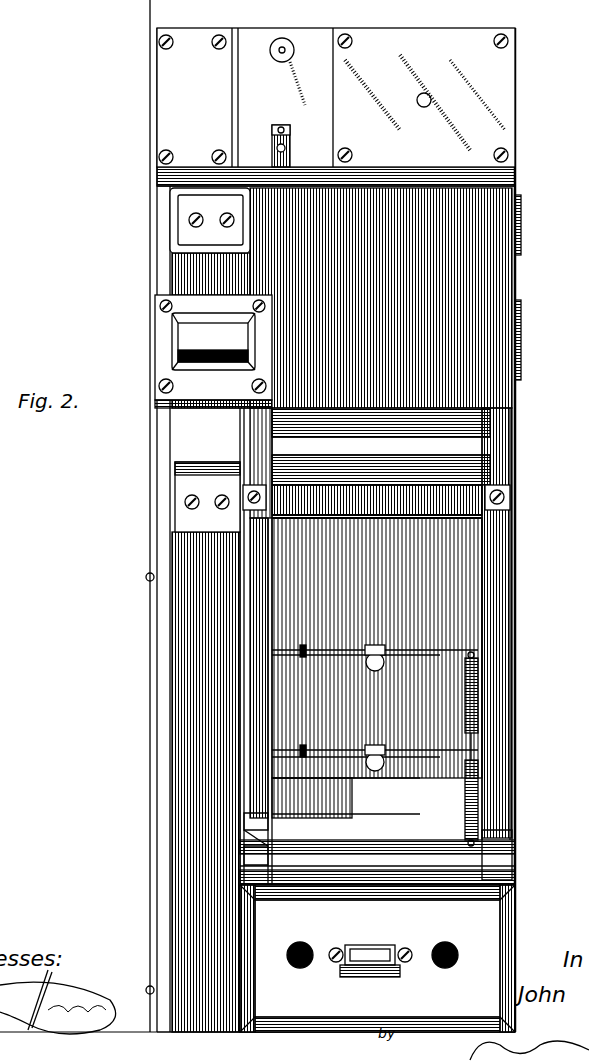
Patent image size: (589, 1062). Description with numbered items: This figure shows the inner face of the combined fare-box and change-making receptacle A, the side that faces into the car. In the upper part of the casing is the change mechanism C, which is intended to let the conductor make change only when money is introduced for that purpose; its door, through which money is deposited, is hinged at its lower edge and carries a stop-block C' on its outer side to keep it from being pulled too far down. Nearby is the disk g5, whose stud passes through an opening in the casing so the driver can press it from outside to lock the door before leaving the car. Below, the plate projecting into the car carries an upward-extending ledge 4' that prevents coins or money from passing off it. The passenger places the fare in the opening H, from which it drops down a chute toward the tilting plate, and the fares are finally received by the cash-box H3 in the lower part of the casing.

The combined fare-box and change-making receptacle A is at (150, 392).
The change mechanism C is at (336, 97).
The stop-block C' is at (269, 146).
The disk g5 is at (413, 95).
The opening H is at (178, 357).
The ledge 4' is at (392, 511).
The cash-box H3 is at (377, 958).